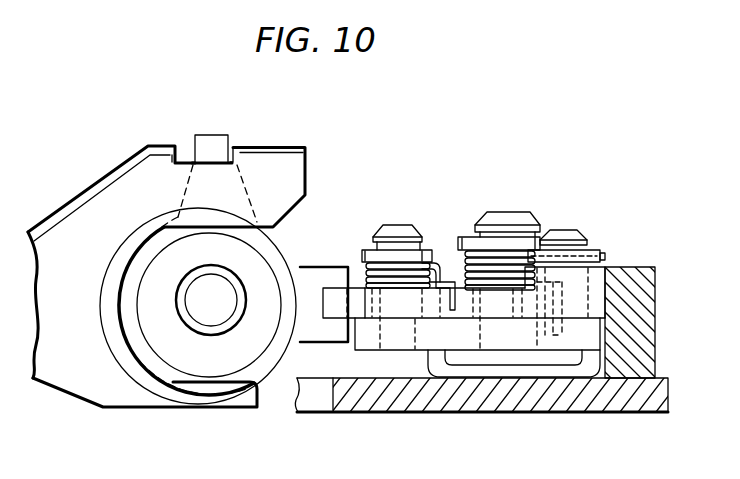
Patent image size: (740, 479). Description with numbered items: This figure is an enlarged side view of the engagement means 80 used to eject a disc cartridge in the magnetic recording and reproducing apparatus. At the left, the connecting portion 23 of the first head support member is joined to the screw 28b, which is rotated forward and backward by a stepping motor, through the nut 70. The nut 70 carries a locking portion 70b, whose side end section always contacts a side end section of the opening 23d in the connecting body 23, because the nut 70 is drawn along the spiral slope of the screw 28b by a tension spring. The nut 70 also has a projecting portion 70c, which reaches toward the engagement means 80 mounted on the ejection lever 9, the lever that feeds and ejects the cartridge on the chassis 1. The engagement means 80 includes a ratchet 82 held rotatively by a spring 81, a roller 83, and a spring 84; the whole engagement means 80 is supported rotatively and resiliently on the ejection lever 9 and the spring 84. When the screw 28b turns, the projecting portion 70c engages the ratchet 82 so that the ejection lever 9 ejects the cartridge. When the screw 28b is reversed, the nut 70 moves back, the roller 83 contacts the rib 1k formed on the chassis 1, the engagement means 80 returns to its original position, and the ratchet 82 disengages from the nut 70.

The chassis 1 is at (514, 411).
The rib 1k is at (605, 294).
The ejection lever 9 is at (600, 384).
The connecting portion 23 is at (102, 181).
The opening 23d is at (183, 152).
The screw 28b is at (213, 330).
The nut 70 is at (298, 222).
The locking portion 70b is at (213, 140).
The projecting portion 70c is at (327, 272).
The engagement means 80 is at (428, 342).
The spring 81 is at (358, 256).
The ratchet 82 is at (332, 315).
The roller 83 is at (600, 270).
The spring 84 is at (460, 257).